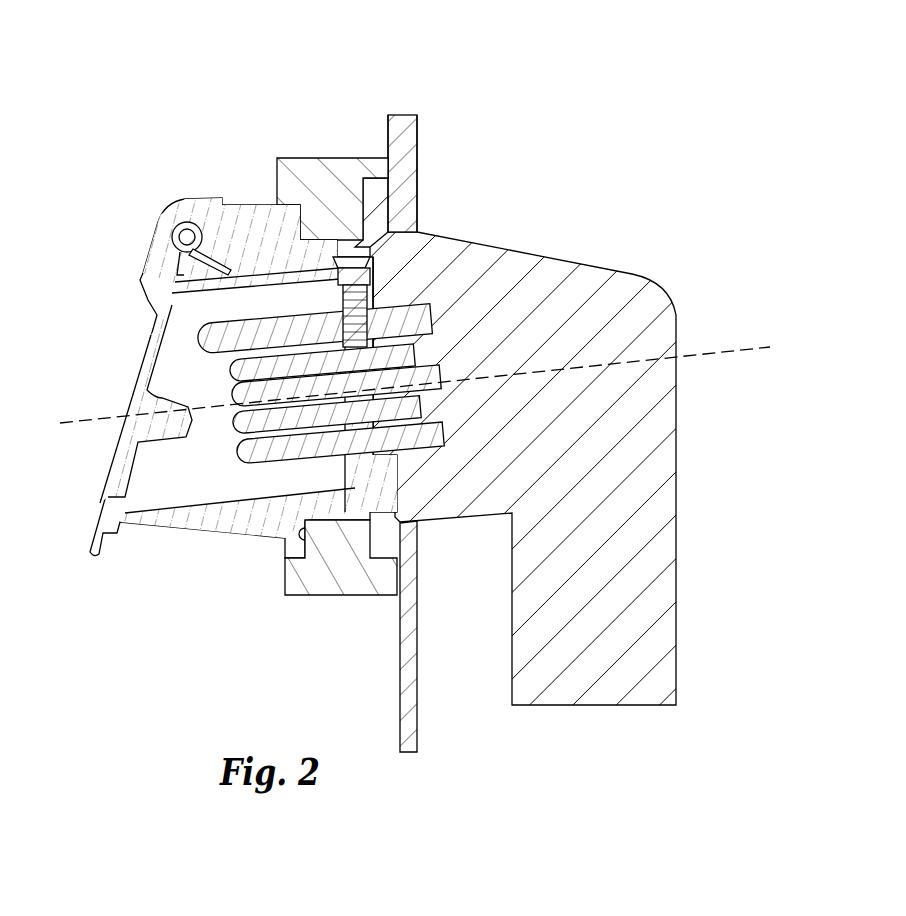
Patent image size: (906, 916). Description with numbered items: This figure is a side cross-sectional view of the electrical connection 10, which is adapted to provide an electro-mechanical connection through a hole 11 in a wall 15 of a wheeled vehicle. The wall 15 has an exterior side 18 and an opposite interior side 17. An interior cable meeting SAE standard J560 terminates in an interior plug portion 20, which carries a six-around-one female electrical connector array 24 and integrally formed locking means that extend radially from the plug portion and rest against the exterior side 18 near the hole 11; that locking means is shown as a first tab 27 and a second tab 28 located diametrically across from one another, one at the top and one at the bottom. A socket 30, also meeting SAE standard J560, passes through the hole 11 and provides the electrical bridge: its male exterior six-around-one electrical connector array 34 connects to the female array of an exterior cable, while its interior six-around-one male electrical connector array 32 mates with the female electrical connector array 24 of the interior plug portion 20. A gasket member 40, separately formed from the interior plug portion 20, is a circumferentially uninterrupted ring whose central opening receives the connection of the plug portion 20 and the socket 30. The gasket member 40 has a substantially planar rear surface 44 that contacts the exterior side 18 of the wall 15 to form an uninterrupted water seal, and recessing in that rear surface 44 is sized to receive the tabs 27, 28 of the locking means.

The electrical connection 10 is at (453, 396).
The hole 11 is at (405, 256).
The wall 15 is at (419, 132).
The interior side 17 is at (418, 140).
The exterior side 18 is at (388, 137).
The interior plug portion 20 is at (453, 448).
The 6-around-1 female electrical connector array 24 is at (440, 372).
The first tab 27 is at (382, 217).
The second tab 28 is at (387, 550).
The socket 30 is at (253, 196).
The interior 6-around-1 male electrical connector array 32 is at (450, 432).
The male exterior 6-around-1 electrical connector array 34 is at (235, 435).
The gasket member 40 is at (318, 150).
The substantially planar rear surface 44 is at (400, 585).